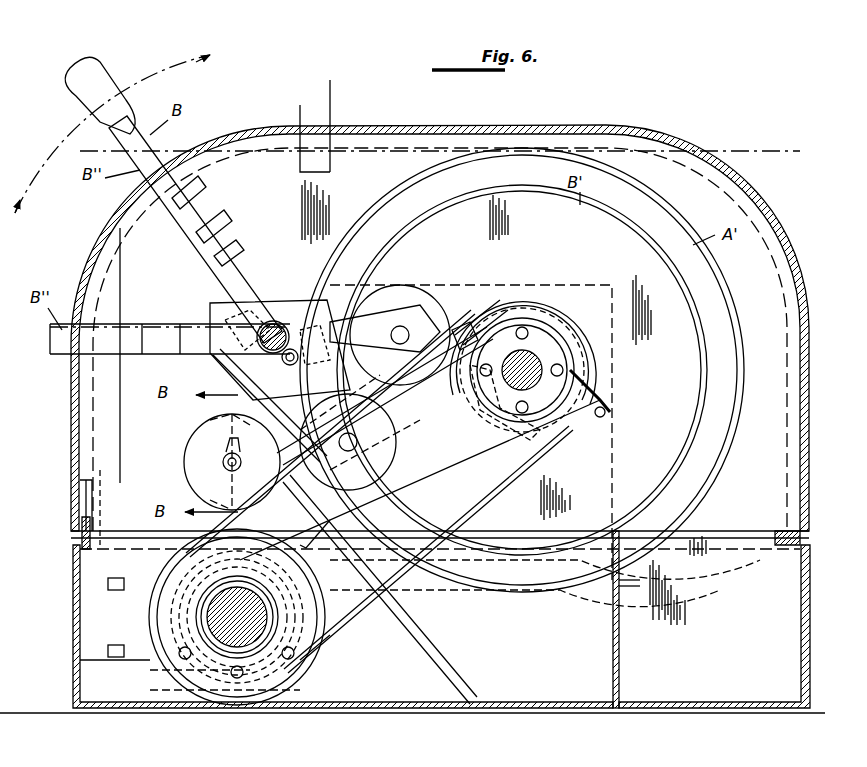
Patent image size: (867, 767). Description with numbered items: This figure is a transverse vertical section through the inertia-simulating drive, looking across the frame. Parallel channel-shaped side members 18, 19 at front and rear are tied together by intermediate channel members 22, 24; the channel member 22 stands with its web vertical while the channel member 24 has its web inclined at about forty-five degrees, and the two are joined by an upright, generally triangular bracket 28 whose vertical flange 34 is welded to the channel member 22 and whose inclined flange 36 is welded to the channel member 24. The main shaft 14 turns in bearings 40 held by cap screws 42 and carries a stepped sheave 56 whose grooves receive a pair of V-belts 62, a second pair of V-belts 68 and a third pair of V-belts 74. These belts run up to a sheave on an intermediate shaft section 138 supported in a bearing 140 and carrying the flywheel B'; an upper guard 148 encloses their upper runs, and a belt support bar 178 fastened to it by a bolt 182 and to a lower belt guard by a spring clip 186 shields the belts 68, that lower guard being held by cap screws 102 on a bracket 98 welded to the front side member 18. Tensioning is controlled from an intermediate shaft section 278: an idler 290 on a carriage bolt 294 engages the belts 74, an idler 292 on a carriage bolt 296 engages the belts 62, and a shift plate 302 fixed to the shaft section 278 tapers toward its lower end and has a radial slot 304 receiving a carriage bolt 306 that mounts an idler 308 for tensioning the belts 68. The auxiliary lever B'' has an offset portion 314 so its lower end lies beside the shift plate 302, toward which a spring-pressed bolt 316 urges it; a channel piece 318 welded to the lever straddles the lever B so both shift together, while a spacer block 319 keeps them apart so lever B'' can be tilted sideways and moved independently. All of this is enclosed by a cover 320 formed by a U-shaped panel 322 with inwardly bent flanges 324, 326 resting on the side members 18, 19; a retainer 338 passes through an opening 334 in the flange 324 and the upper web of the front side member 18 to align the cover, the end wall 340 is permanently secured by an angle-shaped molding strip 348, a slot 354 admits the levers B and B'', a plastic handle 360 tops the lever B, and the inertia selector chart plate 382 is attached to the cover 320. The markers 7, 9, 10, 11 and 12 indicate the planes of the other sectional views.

The main shaft 14 is at (236, 585).
The side member 18 is at (72, 690).
The side member 19 is at (804, 650).
The intermediate channel member 22 is at (620, 660).
The intermediate channel member 24 is at (430, 640).
The bracket 28 is at (483, 285).
The vertical flange 34 is at (605, 640).
The inclined flange 36 is at (215, 364).
The bearing 40 is at (165, 695).
The cap screw 42 is at (160, 676).
The stepped sheave 56 is at (310, 585).
The V-belts 62 is at (398, 342).
The V-belts 68 is at (345, 500).
The V-belts 74 is at (462, 325).
The bracket 98 is at (100, 660).
The cap screw 102 is at (135, 584).
The intermediate shaft section 138 is at (490, 420).
The bearing 140 is at (606, 414).
The upper guard 148 is at (532, 292).
The belt support bar 178 is at (535, 470).
The bolt 182 is at (605, 405).
The spring clip 186 is at (330, 650).
The intermediate shaft section 278 is at (258, 334).
The idler 290 is at (425, 290).
The idler 292 is at (190, 460).
The carriage bolt 294 is at (400, 326).
The carriage bolt 296 is at (225, 455).
The shift plate 302 is at (330, 300).
The radial slot 304 is at (393, 470).
The carriage bolt 306 is at (395, 455).
The idler 308 is at (400, 425).
The offset portion 314 is at (235, 245).
The spring-pressed bolt 316 is at (298, 358).
The channel piece 318 is at (195, 190).
The spacer block 319 is at (180, 247).
The cover 320 is at (684, 138).
The U-shaped panel 322 is at (76, 392).
The flange 324 is at (108, 538).
The flange 326 is at (785, 531).
The opening 334 is at (75, 555).
The retainer 338 is at (90, 500).
The end wall 340 is at (340, 189).
The molding strip 348 is at (737, 205).
The slot 354 is at (90, 240).
The plastic handle 360 is at (86, 60).
The metal plate 382 is at (552, 130).
The section line 7 is at (783, 545).
The section line 9 is at (258, 105).
The section line 10 is at (522, 172).
The section line 11 is at (598, 322).
The section line 12 is at (355, 80).